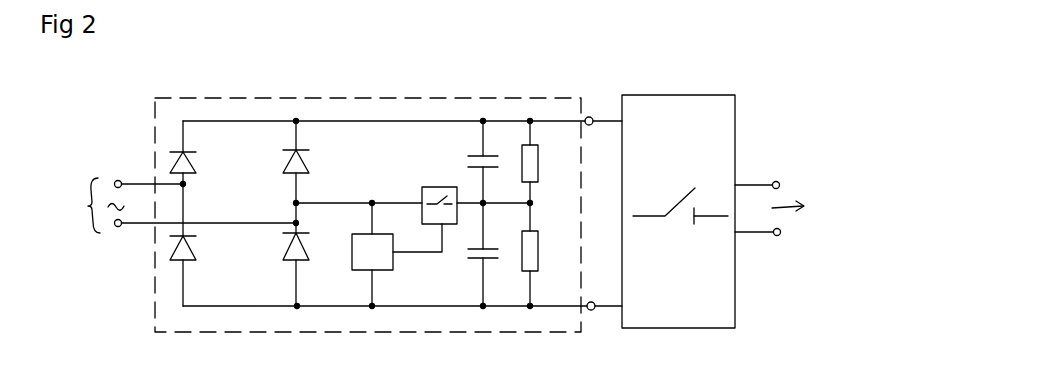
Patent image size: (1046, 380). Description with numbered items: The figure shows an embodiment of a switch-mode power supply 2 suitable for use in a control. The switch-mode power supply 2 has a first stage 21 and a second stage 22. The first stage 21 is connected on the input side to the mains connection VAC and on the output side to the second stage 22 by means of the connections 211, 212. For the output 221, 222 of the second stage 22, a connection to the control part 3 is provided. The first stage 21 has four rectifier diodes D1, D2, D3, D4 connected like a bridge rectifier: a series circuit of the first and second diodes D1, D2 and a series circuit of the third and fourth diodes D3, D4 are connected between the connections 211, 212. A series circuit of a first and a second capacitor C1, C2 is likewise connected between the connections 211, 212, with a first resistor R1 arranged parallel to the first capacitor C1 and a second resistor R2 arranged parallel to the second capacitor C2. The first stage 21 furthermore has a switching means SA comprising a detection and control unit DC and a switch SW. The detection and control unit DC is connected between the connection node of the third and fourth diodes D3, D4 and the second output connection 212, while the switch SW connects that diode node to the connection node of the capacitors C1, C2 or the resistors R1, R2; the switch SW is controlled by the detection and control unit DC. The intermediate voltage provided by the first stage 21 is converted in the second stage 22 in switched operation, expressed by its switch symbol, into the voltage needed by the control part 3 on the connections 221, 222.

The switch-mode power supply 2 is at (633, 75).
The first stage 21 is at (549, 332).
The second stage 22 is at (693, 329).
The connection 211 is at (589, 116).
The second output connection 212 is at (592, 310).
The output connection 221 is at (774, 181).
The output connection 222 is at (777, 236).
The control part 3 is at (797, 210).
The first diode D1 is at (197, 163).
The second diode D2 is at (197, 250).
The third diode D3 is at (310, 160).
The fourth diode D4 is at (310, 247).
The first capacitor C1 is at (494, 153).
The second capacitor C2 is at (491, 246).
The first resistor R1 is at (538, 164).
The second resistor R2 is at (538, 253).
The switch SW is at (438, 186).
The switching means SA is at (403, 199).
The detection and control unit DC is at (386, 271).
The mains connection VAC is at (168, 205).